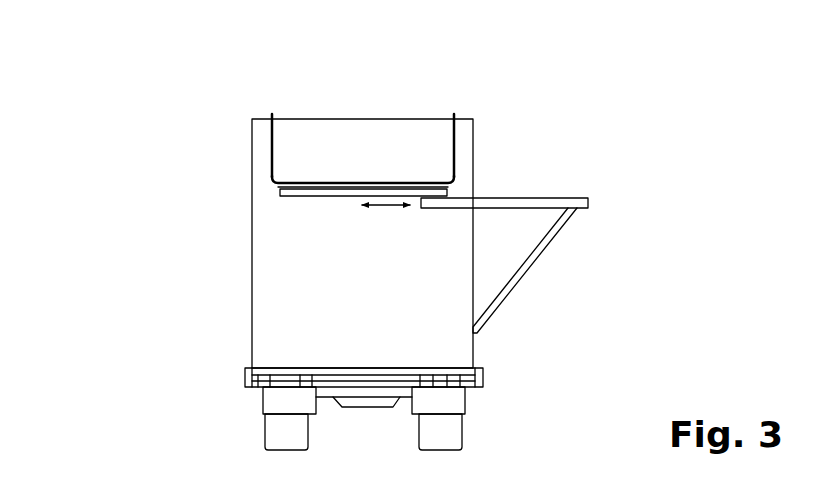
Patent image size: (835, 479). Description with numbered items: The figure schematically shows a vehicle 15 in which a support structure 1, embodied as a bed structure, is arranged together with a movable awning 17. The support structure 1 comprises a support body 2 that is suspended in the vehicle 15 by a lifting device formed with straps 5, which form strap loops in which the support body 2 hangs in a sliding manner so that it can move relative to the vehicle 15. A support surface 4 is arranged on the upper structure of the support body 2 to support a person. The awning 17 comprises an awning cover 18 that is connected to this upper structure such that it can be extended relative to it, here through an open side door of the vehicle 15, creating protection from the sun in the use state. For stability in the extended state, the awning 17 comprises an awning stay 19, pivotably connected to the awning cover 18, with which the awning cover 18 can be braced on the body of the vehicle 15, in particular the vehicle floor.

The support structure 1 is at (275, 96).
The support body 2 is at (284, 200).
The support surface 4 is at (353, 180).
The straps 5 is at (272, 143).
The vehicle 15 is at (106, 116).
The awning 17 is at (448, 208).
The awning cover 18 is at (517, 198).
The awning stay 19 is at (548, 247).